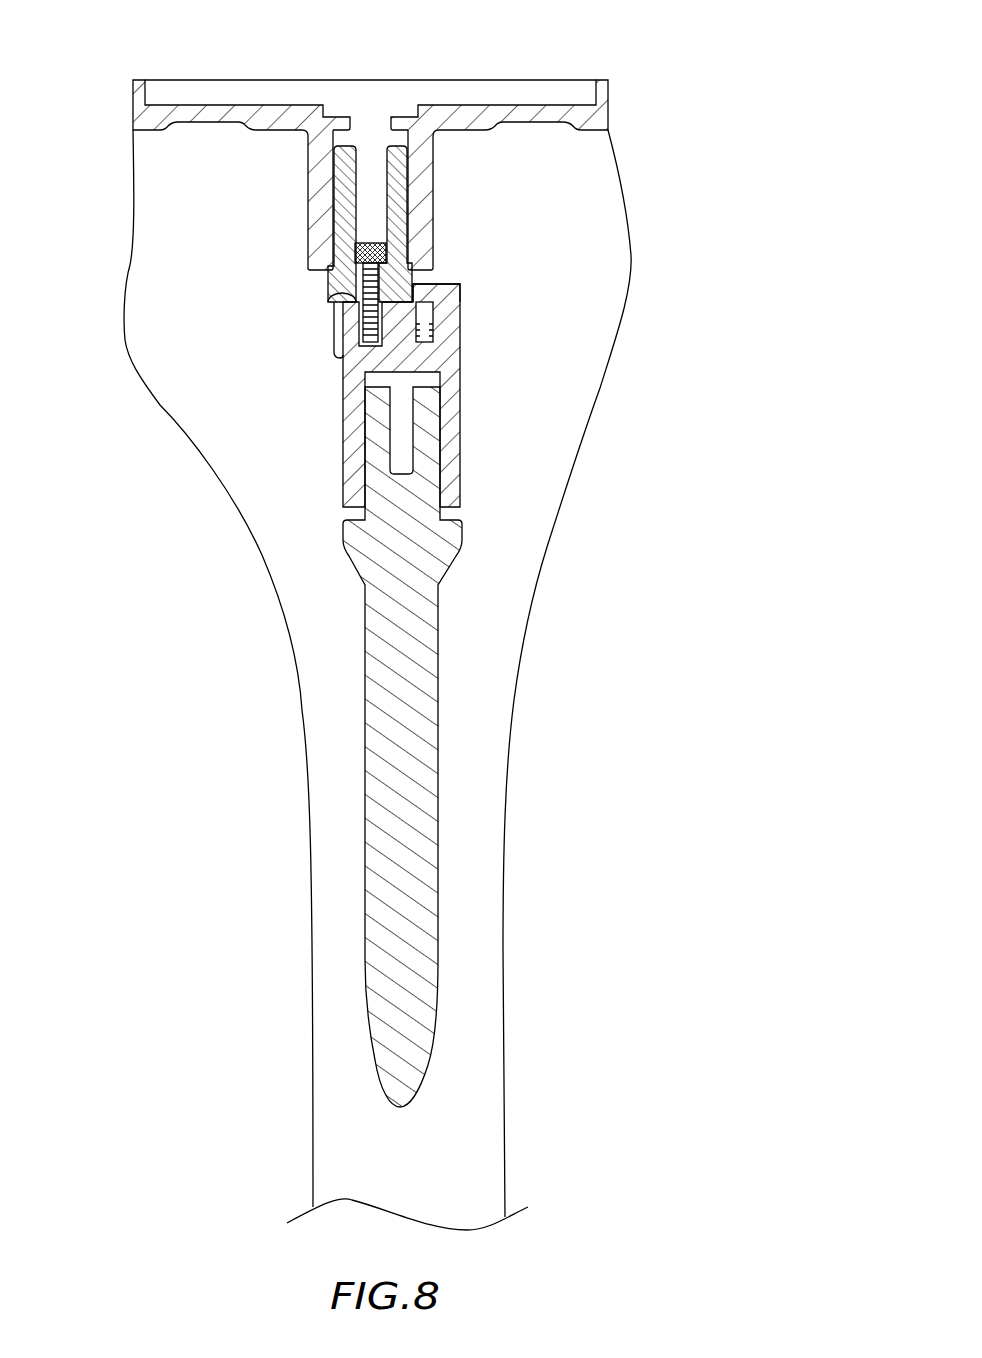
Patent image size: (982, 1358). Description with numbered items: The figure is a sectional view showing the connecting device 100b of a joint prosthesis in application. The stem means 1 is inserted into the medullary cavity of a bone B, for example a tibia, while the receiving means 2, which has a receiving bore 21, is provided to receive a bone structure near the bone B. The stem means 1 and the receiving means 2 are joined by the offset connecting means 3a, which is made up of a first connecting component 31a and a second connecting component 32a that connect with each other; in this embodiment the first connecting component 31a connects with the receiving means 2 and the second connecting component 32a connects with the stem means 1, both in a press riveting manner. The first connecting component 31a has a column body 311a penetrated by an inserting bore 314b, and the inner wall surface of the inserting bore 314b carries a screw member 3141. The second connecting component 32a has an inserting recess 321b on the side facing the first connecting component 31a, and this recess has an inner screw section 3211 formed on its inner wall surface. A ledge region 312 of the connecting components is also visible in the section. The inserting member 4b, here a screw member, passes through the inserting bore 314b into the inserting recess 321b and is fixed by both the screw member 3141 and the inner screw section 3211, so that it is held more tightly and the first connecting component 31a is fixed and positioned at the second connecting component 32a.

The electronic device 100b is at (706, 82).
The bone B is at (611, 236).
The receiving means 2 is at (332, 175).
The receiving bore 21 is at (317, 167).
The connecting module 3a is at (389, 326).
The first connecting component 31a is at (363, 237).
The column body 311a is at (330, 213).
The inserting bore 314b is at (378, 173).
The screw member 3141 is at (350, 300).
The ledge 312 is at (457, 290).
The second connecting component 32a is at (398, 395).
The inserting recess 321b is at (425, 326).
The inner screw section 3211 is at (345, 360).
The inserting member 4b is at (363, 330).
The stem means 1 is at (433, 777).